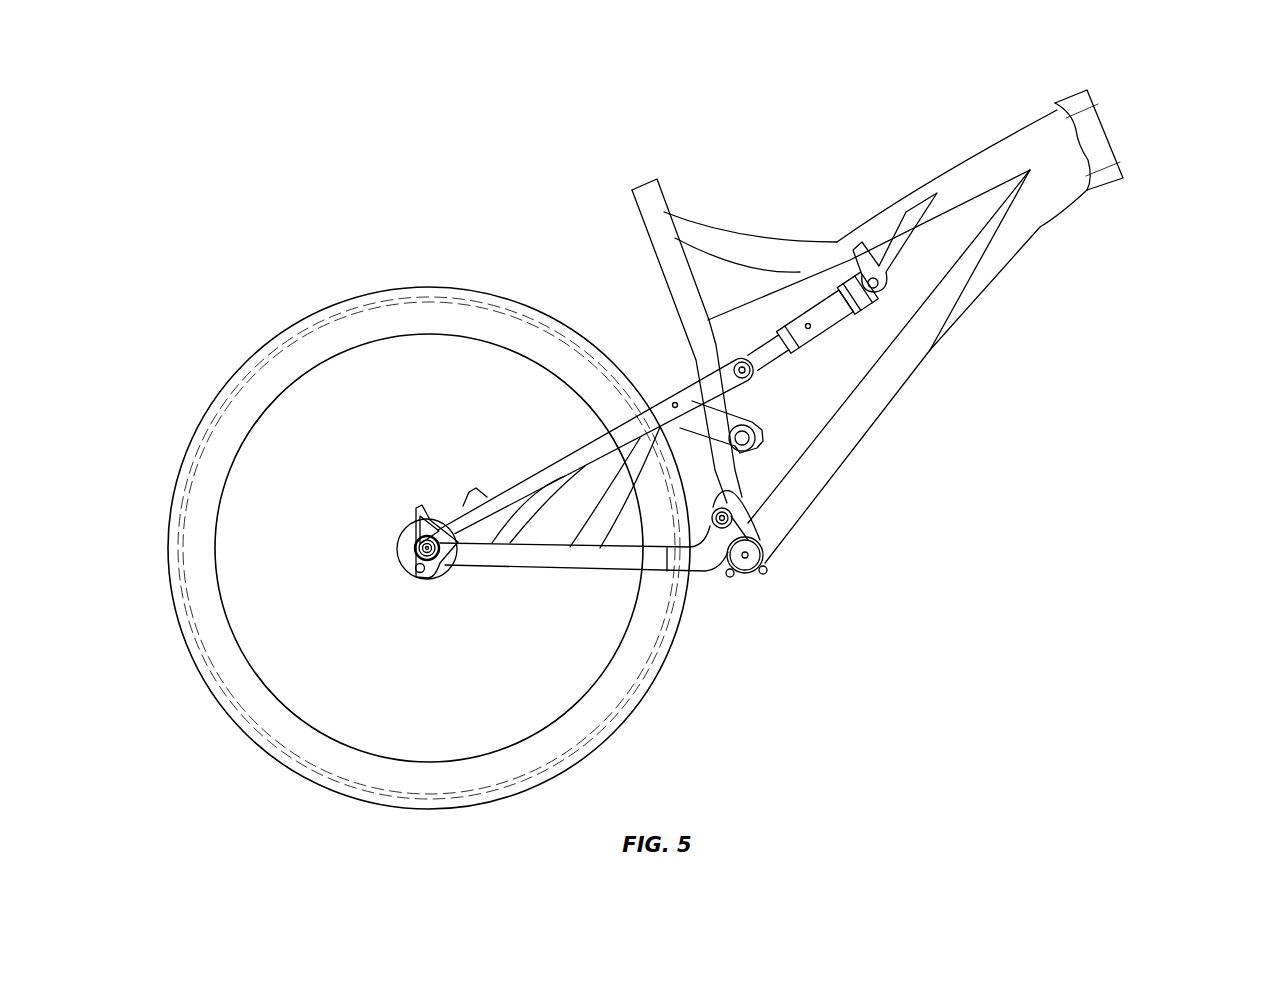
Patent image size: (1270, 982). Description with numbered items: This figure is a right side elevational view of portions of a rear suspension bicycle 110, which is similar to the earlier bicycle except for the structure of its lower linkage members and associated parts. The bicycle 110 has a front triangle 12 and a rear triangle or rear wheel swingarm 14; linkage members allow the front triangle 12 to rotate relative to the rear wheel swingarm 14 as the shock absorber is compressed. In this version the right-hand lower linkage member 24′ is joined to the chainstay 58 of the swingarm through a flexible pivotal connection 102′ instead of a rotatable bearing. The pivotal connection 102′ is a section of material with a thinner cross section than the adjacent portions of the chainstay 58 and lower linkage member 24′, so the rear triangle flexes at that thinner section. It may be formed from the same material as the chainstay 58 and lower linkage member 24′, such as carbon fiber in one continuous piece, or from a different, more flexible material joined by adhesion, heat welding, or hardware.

The bicycle 110 is at (1195, 105).
The front triangle 12 is at (866, 151).
The rear wheel swingarm 14 is at (499, 616).
The chainstay 58 is at (465, 571).
The flexible pivotal connection 102′ is at (580, 571).
The right-hand lower linkage member 24′ is at (627, 578).